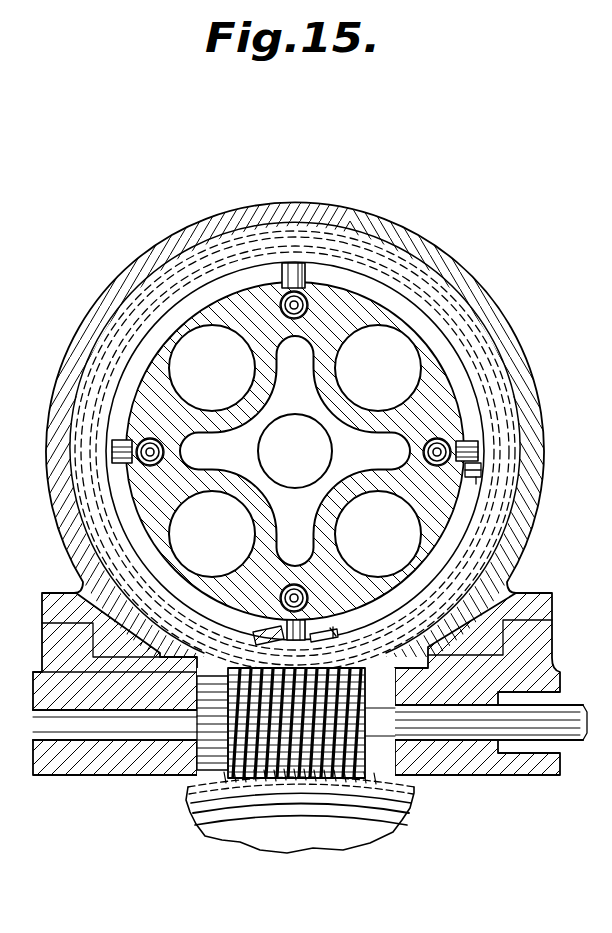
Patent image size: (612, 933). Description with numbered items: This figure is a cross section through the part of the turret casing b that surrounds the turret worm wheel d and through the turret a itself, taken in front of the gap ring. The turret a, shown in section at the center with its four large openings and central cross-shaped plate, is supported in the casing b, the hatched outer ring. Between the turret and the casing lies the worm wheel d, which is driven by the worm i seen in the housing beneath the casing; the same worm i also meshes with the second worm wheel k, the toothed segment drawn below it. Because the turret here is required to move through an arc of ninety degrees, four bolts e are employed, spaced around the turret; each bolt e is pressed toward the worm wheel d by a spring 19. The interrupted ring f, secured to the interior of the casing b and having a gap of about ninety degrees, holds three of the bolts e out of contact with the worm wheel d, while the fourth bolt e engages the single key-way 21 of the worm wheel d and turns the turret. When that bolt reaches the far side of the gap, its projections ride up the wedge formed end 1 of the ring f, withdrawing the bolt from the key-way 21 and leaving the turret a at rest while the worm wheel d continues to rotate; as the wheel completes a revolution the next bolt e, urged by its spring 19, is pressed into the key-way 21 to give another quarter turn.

The casing b is at (78, 330).
The turret a is at (344, 296).
The interrupted ring f is at (474, 404).
The worm wheel d is at (363, 656).
The bolt e is at (295, 265).
The spring 19 is at (162, 445).
The wedge formed end 1 is at (477, 485).
The key-way 21 is at (335, 639).
The worm i is at (218, 771).
The second worm wheel k is at (300, 811).